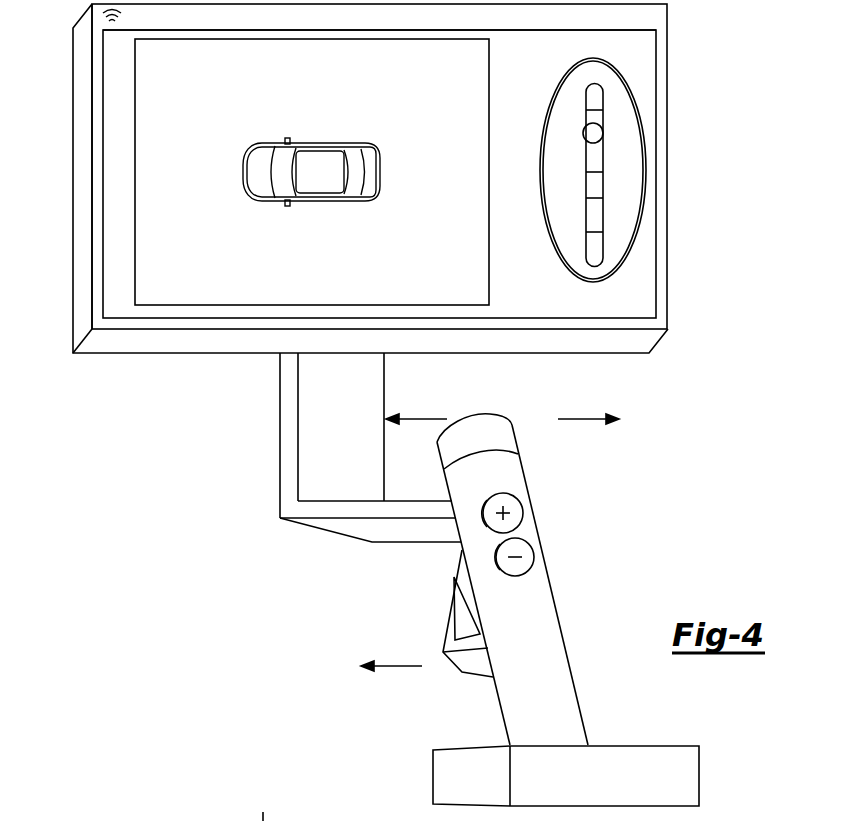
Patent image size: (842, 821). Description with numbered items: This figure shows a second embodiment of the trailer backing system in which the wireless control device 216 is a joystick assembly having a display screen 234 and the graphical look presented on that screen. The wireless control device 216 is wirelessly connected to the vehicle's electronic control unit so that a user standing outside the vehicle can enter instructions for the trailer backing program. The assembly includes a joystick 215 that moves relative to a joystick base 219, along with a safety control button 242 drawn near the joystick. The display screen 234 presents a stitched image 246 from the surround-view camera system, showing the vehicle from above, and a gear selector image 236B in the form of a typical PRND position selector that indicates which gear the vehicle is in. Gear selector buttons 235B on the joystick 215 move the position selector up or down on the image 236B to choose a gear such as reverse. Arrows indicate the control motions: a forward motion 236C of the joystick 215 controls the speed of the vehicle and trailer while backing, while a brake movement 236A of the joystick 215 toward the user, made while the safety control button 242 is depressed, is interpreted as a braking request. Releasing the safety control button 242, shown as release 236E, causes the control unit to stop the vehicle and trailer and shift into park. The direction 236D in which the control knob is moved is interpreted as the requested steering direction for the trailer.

The display screen 234 is at (652, 20).
The stitched image 246 is at (153, 233).
The gear selector image 236B is at (630, 160).
The wireless control device 216 is at (235, 424).
The joystick 215 is at (543, 641).
The gear selector buttons 235B is at (543, 509).
The safety control button 242 is at (428, 590).
The joystick base 219 is at (447, 778).
The forward motion 236C is at (415, 419).
The brake movement 236A is at (588, 419).
The release of the safety control button 236E is at (400, 667).
The direction the knob is moved 236D is at (266, 805).